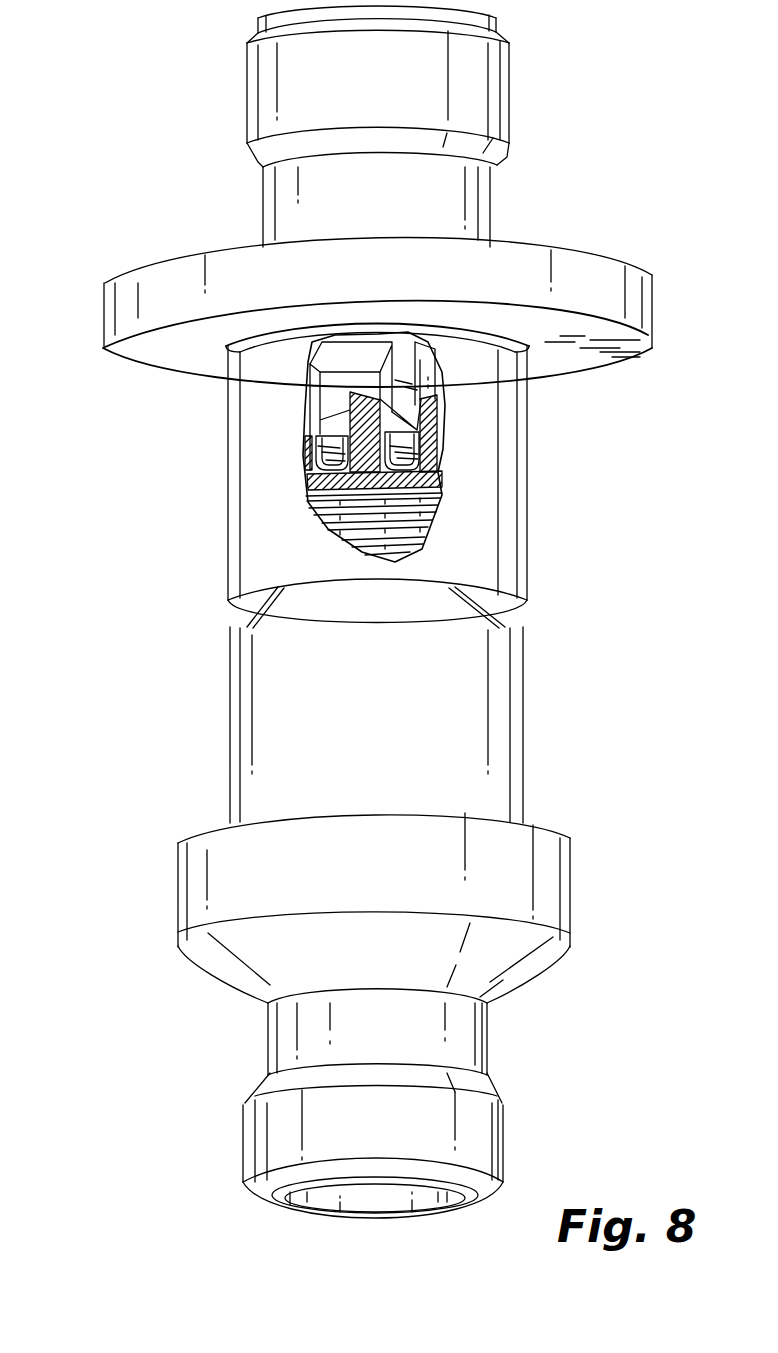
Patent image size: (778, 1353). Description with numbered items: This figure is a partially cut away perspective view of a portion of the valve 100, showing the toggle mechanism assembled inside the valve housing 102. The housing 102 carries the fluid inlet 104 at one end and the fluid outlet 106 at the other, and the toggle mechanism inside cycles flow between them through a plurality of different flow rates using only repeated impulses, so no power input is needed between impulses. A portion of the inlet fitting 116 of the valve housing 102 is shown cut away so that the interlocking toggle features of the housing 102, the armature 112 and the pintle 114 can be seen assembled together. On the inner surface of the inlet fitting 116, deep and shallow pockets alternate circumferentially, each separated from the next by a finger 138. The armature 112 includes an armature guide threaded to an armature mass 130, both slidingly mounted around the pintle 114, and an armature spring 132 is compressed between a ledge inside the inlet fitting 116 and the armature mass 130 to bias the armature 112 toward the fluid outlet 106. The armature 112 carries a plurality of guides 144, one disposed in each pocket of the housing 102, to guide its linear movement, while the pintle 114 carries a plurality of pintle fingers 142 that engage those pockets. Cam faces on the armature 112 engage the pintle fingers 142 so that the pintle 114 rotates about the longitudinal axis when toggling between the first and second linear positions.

The valve 100 is at (140, 152).
The valve housing 102 is at (101, 310).
The fluid inlet 104 is at (505, 90).
The fluid outlet 106 is at (570, 905).
The armature 112 is at (335, 425).
The pintle 114 is at (335, 358).
The inlet fitting 116 is at (528, 478).
The armature mass 130 is at (527, 725).
The armature spring 132 is at (330, 515).
The finger 138 is at (373, 396).
The pintle fingers 142 is at (407, 368).
The guides 144 is at (322, 455).